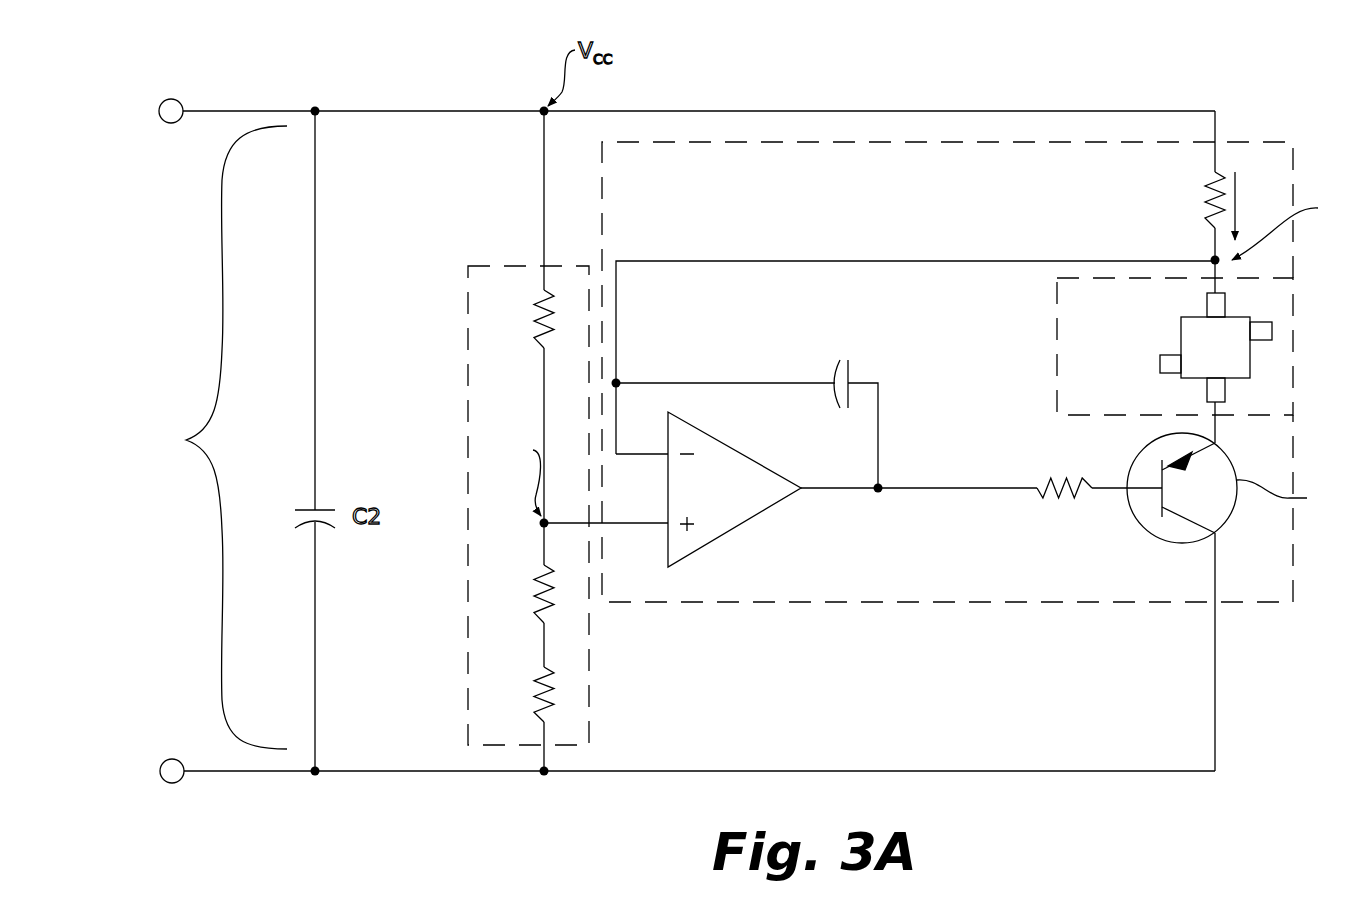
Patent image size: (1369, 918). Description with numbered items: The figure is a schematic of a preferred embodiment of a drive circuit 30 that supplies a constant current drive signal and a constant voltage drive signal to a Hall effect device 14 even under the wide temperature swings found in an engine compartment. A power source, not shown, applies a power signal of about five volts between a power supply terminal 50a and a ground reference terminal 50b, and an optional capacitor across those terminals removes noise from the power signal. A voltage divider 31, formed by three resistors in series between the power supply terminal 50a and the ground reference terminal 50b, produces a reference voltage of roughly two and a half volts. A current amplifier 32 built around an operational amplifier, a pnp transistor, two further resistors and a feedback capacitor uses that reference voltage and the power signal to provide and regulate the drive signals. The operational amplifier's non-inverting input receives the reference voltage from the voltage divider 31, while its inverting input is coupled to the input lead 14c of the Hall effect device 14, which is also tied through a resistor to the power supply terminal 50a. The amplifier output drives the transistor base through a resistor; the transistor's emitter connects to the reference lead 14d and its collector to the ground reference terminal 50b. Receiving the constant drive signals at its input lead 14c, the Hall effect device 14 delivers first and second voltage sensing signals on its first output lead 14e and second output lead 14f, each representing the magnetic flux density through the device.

The power supply terminal 50a is at (171, 98).
The ground reference terminal 50b is at (157, 771).
The drive circuit 30 is at (218, 437).
The voltage divider 31 is at (468, 352).
The current amplifier 32 is at (1256, 140).
The Hall effect device 14 is at (1210, 343).
The input lead 14c is at (1207, 303).
The reference lead 14d is at (1225, 397).
The first output lead 14e is at (1160, 362).
The second output lead 14f is at (1272, 330).